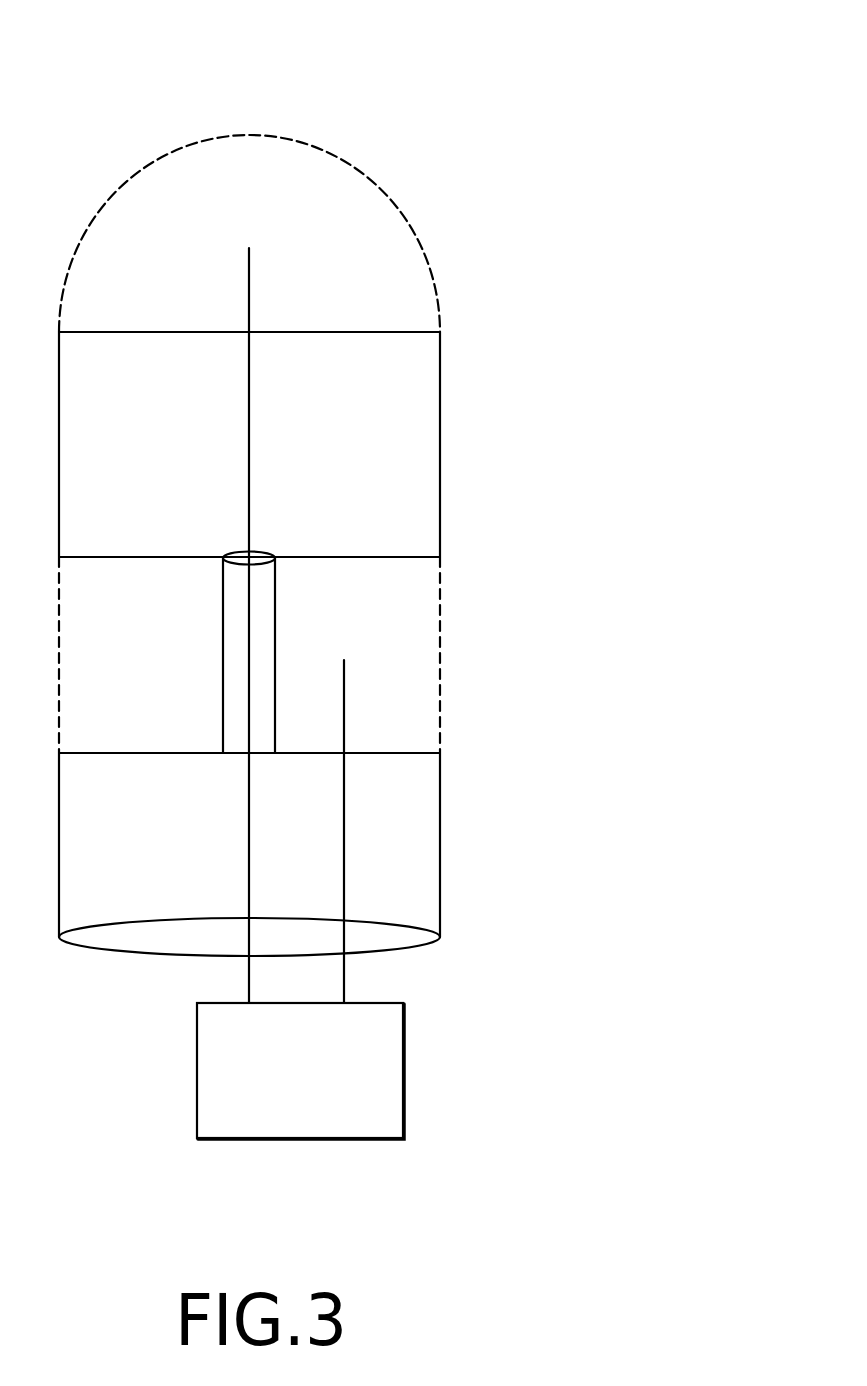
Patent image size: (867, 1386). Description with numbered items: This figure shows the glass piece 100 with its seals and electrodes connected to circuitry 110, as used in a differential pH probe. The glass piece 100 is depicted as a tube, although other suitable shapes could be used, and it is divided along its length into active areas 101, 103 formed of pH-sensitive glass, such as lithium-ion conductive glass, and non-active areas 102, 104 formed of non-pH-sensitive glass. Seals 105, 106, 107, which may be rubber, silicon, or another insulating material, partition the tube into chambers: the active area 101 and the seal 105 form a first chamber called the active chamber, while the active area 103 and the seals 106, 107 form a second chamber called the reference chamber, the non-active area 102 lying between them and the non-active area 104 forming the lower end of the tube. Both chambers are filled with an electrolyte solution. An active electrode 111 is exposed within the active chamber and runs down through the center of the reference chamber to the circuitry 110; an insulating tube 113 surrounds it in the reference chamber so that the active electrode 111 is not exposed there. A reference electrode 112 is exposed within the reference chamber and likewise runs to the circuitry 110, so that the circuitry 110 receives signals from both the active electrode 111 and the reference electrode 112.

The glass piece 100 is at (648, 62).
The active area 101 is at (363, 176).
The non-active area 102 is at (59, 455).
The active area 103 is at (59, 640).
The non-active area 104 is at (59, 832).
The seal 105 is at (315, 332).
The seal 106 is at (88, 557).
The seal 107 is at (105, 753).
The circuitry 110 is at (404, 1072).
The active electrode 111 is at (249, 248).
The reference electrode 112 is at (344, 690).
The insulating tube 113 is at (275, 605).